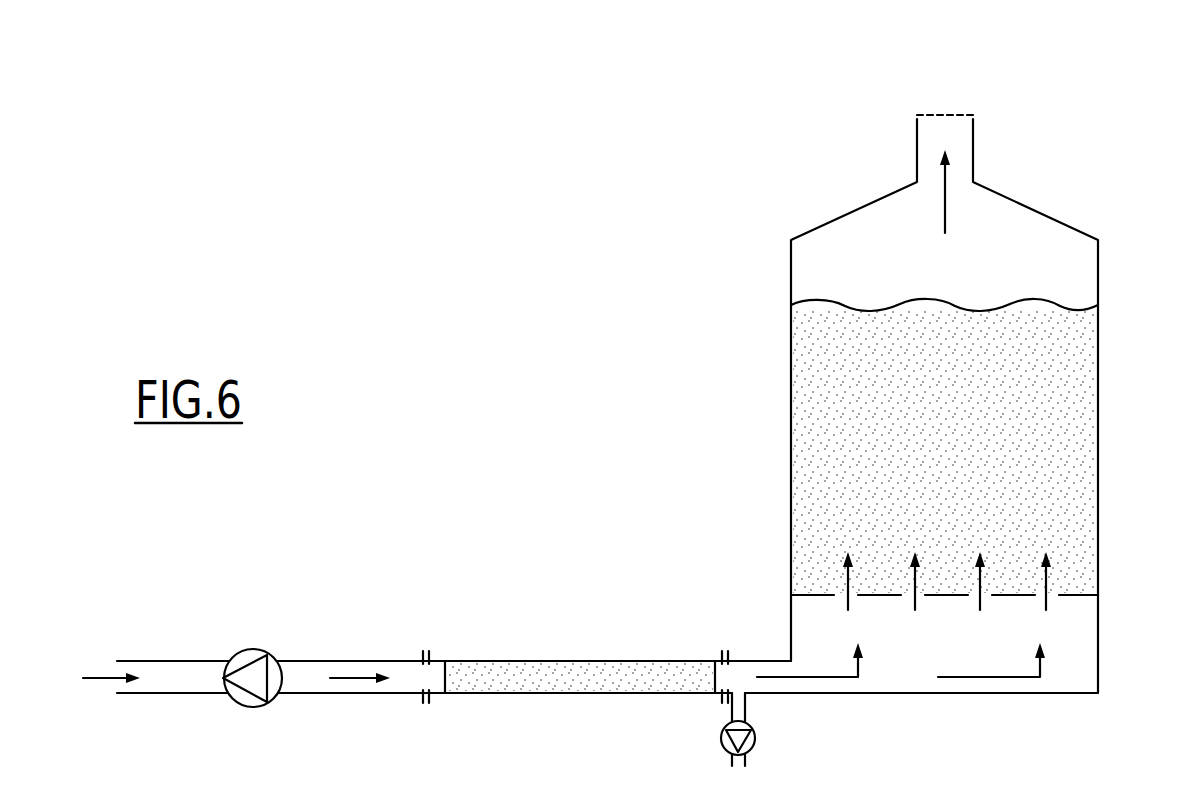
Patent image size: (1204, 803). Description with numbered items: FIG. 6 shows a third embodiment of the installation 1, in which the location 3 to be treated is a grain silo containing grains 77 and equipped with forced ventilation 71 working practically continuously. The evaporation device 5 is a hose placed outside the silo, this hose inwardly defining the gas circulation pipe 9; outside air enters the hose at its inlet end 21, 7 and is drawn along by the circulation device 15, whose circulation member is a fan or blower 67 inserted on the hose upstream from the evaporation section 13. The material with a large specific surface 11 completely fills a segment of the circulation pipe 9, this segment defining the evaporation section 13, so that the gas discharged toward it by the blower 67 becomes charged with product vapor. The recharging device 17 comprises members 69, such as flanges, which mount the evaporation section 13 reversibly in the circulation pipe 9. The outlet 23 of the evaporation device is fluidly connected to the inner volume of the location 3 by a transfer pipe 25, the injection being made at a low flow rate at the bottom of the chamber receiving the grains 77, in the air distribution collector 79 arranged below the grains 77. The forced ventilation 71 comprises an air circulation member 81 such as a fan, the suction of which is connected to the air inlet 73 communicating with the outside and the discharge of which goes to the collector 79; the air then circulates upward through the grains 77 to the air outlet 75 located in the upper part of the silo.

The liquid treatment installation 1 is at (400, 174).
The location 3 is at (954, 421).
The evaporation device 5 is at (249, 650).
The inlet pipe 7 is at (196, 707).
The gas circulation pipe 9 is at (307, 680).
The material with a large specific surface 11 is at (525, 686).
The evaporation section 13 is at (633, 676).
The circulation device 15 is at (245, 726).
The recharging device 17 is at (580, 644).
The inlet 21 is at (163, 682).
The outlet 23 is at (763, 668).
The transfer pipe 25 is at (788, 668).
The fan or blower 67 is at (266, 696).
The members 69 is at (424, 651).
The forced ventilation 71 is at (723, 745).
The air inlet 73 is at (745, 762).
The air outlet 75 is at (973, 168).
The grains 77 is at (832, 427).
The air distribution collector 79 is at (876, 690).
The air circulation member 81 is at (766, 745).